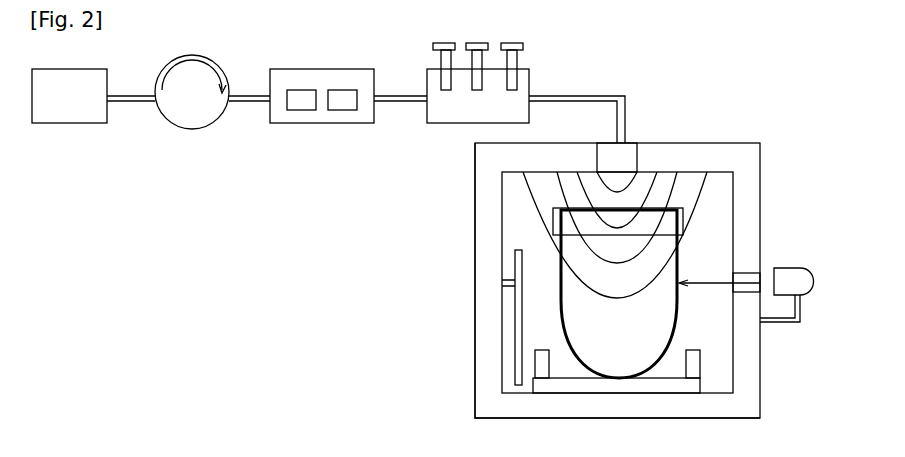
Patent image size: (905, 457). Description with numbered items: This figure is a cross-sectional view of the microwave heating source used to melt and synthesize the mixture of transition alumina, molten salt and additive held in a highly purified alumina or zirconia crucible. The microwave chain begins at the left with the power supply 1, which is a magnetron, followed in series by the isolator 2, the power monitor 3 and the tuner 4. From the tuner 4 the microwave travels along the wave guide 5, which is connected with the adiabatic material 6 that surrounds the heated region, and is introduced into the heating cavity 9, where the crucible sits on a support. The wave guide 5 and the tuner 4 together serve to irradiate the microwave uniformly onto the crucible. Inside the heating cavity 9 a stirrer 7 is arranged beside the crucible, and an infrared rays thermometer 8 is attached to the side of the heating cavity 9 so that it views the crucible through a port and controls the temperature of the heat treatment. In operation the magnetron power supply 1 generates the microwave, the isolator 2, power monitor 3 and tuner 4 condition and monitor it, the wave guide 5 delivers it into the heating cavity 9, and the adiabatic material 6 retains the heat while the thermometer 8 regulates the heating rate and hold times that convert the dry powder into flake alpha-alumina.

The power supply 1 is at (72, 123).
The isolator 2 is at (192, 129).
The power monitor 3 is at (318, 123).
The tuner 4 is at (443, 123).
The wave guide 5 is at (604, 98).
The adiabatic material 6 is at (724, 156).
The stirrer 7 is at (516, 318).
The observation camera 8 is at (790, 278).
The heating cavity 9 is at (475, 406).